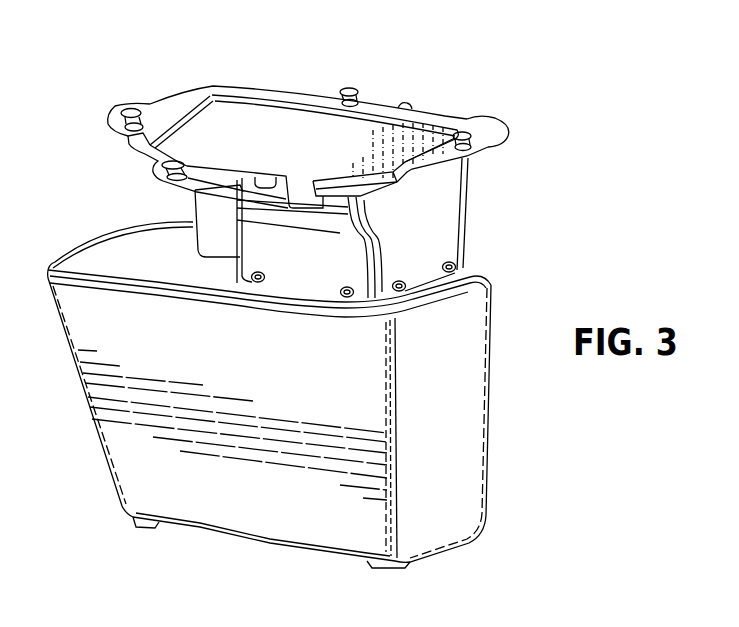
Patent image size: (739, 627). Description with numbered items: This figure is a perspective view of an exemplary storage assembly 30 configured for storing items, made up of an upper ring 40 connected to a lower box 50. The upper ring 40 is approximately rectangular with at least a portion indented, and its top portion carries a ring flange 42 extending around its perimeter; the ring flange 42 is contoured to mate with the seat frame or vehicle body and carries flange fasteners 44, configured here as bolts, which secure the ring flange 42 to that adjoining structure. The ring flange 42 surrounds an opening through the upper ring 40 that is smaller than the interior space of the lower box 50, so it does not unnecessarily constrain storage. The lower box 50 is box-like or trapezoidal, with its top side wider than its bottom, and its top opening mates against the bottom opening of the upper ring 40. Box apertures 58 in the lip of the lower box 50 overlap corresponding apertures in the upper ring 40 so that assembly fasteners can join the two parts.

The storage assembly 30 is at (536, 223).
The upper ring 40 is at (470, 190).
The ring flange 42 is at (482, 118).
The flange fasteners 44 is at (128, 108).
The lower box 50 is at (490, 408).
The box apertures 58 is at (256, 283).